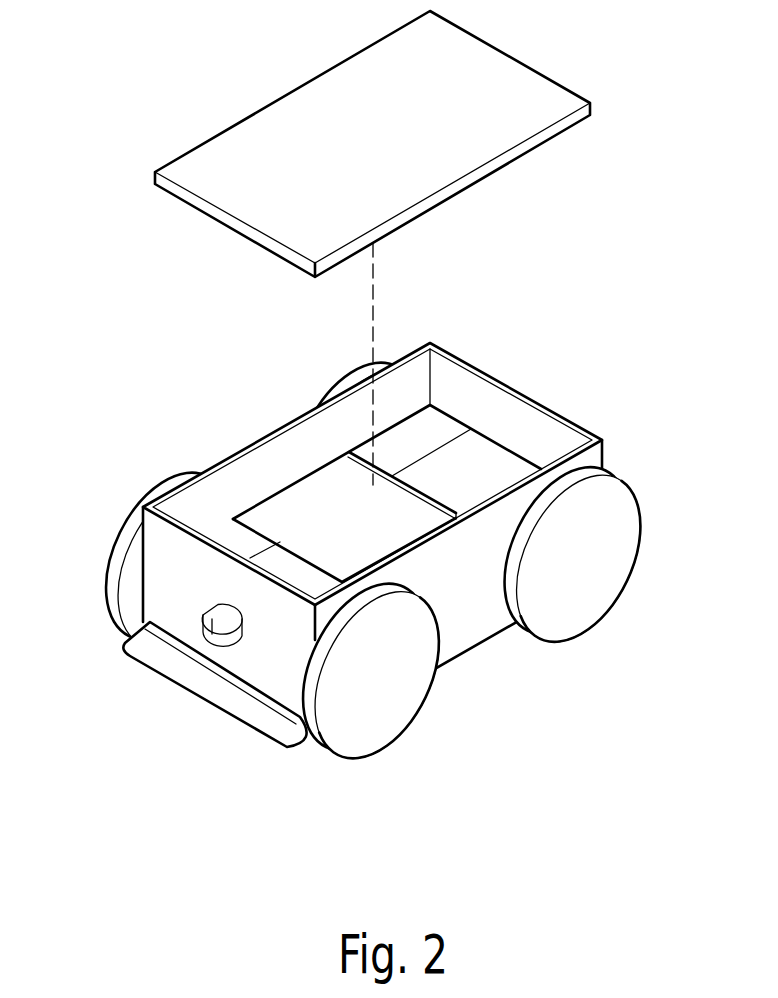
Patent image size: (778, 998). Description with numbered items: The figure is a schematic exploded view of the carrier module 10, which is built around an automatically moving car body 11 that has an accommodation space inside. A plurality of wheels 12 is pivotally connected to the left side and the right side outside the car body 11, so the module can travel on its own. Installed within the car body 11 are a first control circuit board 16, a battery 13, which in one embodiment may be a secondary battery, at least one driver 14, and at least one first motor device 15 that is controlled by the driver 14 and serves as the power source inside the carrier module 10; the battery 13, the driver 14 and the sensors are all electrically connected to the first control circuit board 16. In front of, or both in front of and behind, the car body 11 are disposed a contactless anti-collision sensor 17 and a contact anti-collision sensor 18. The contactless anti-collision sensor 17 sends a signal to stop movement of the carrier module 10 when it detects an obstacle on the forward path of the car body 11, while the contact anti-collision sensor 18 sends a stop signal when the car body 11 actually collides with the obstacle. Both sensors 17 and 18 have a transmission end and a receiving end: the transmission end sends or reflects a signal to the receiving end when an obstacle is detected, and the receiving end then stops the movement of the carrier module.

The carrier module 10 is at (360, 415).
The car body 11 is at (462, 637).
The wheels 12 is at (612, 577).
The battery 13 is at (302, 488).
The driver 14 is at (438, 423).
The first motor device 15 is at (497, 462).
The first control circuit board 16 is at (333, 98).
The contactless anti-collision sensor 17 is at (203, 610).
The contact anti-collision sensor 18 is at (235, 704).